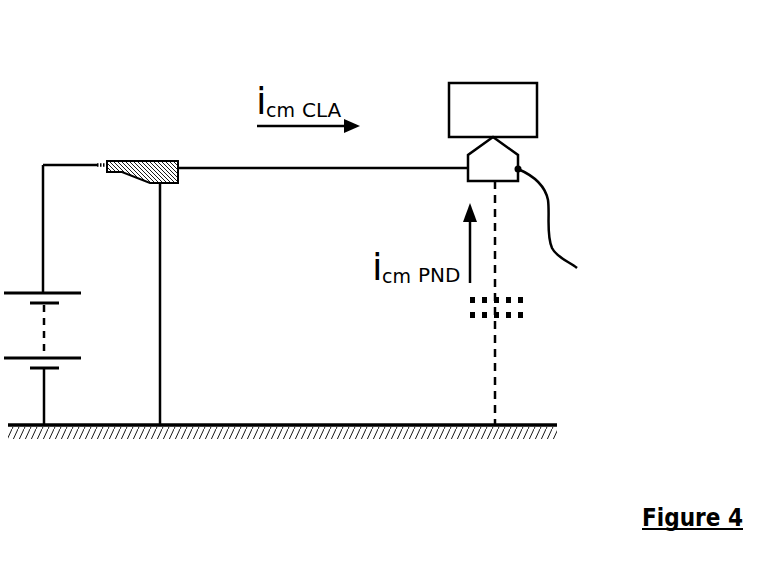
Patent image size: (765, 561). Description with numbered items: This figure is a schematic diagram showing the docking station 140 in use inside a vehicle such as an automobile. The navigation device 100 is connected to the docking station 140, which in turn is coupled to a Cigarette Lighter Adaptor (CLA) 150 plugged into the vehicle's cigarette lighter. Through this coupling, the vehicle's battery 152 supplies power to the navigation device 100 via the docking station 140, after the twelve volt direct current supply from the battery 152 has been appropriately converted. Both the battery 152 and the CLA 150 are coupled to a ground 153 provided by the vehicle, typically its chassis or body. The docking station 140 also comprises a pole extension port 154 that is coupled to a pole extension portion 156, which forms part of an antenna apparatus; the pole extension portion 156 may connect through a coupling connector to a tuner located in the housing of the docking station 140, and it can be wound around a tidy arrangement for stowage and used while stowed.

The navigation device 100 is at (493, 83).
The docking station 140 is at (478, 172).
The Cigarette Lighter Adaptor (CLA) 150 is at (138, 162).
The battery 152 is at (70, 270).
The ground 153 is at (380, 427).
The pole extension port 154 is at (518, 169).
The pole extension portion 156 is at (550, 210).